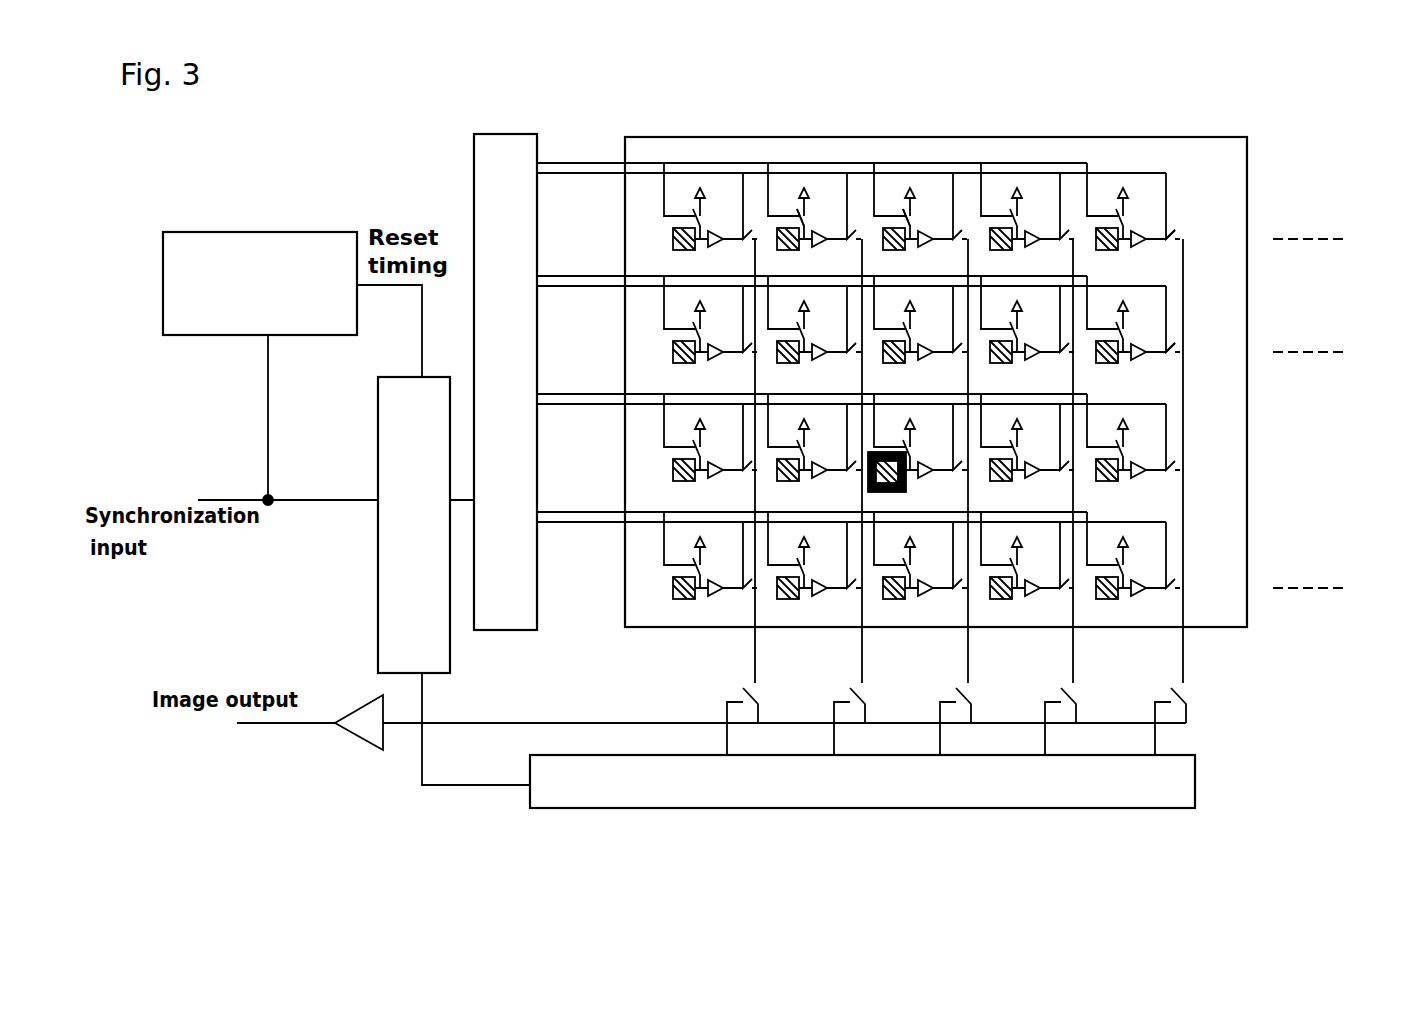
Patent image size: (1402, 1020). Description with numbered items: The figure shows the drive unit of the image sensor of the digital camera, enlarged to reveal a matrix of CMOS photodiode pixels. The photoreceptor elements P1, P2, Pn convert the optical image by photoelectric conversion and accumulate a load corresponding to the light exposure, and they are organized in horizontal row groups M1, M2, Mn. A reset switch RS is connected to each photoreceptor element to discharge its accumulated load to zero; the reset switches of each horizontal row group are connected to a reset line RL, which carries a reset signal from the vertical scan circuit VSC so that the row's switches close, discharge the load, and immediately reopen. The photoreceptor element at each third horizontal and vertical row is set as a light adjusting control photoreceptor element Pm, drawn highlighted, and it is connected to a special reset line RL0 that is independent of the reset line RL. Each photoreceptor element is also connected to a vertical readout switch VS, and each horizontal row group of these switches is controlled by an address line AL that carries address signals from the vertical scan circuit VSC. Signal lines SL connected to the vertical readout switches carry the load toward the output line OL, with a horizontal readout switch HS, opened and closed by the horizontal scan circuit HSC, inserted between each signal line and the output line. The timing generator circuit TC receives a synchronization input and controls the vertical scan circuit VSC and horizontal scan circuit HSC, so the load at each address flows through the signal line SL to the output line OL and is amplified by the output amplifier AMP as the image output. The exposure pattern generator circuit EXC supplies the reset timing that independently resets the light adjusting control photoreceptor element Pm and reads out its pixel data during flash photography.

The exposure pattern generator circuit EXC is at (258, 248).
The timing generator circuit TC is at (382, 425).
The vertical scan circuit VSC is at (474, 162).
The horizontal scan circuit HSC is at (840, 808).
The output amplifier AMP is at (365, 728).
The output line OL is at (478, 725).
The reset line RL is at (582, 278).
The special reset line RL0 is at (570, 392).
The address line AL is at (604, 286).
The reset switch RS is at (923, 217).
The photoreceptor element P1 is at (673, 236).
The photoreceptor element P2 is at (790, 205).
The light adjusting control photoreceptor element Pm is at (895, 492).
The photoreceptor element Pn is at (1101, 597).
The vertical readout switch VS is at (1183, 330).
The signal line SL is at (1073, 497).
The horizontal readout switch HS is at (1183, 693).
The horizontal row group M1 is at (1335, 239).
The horizontal row group M2 is at (1336, 352).
The horizontal row group Mn is at (1333, 587).